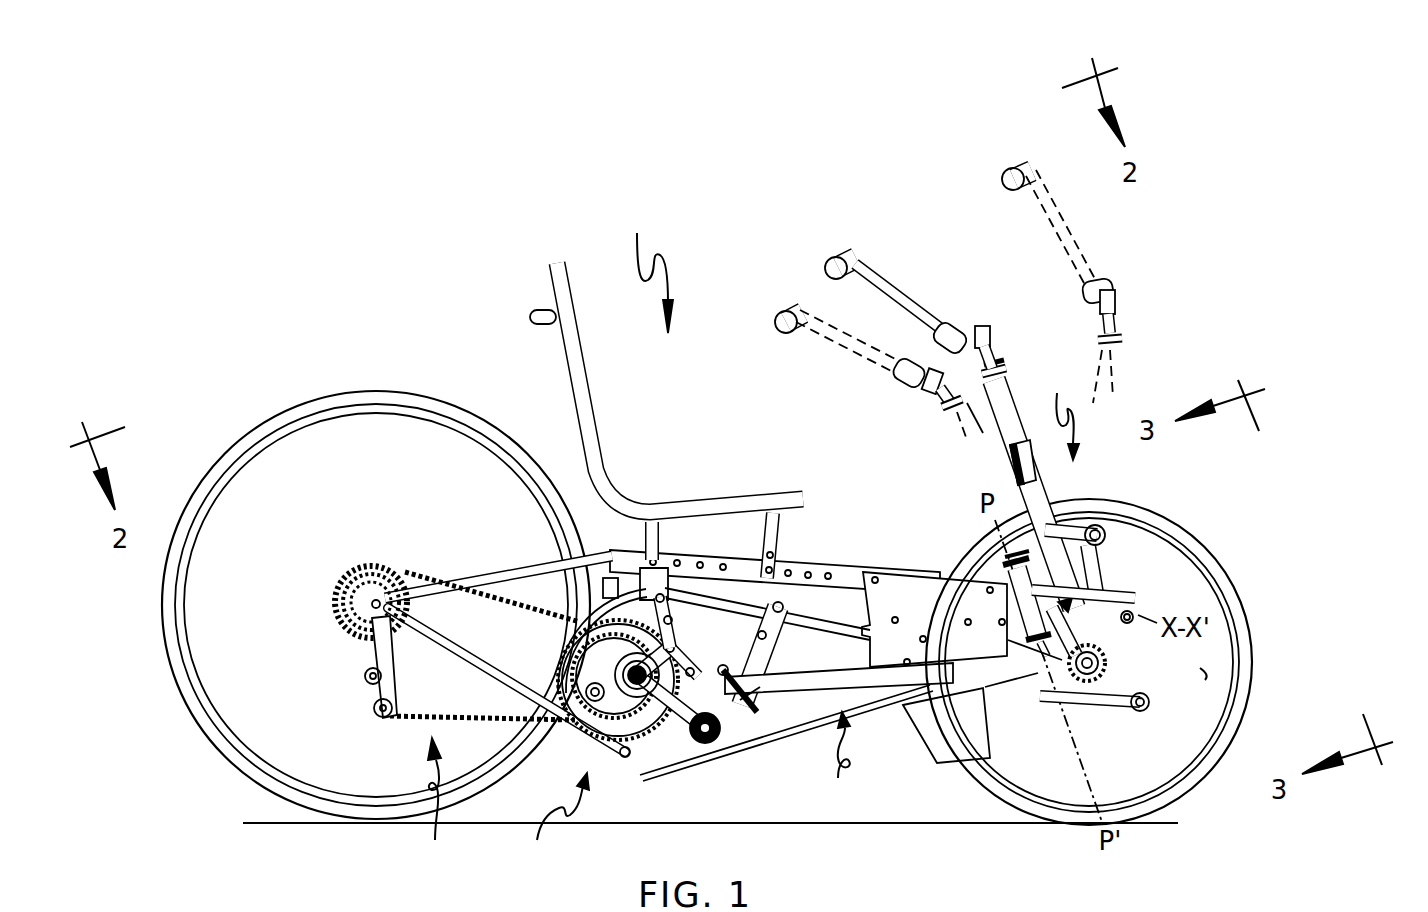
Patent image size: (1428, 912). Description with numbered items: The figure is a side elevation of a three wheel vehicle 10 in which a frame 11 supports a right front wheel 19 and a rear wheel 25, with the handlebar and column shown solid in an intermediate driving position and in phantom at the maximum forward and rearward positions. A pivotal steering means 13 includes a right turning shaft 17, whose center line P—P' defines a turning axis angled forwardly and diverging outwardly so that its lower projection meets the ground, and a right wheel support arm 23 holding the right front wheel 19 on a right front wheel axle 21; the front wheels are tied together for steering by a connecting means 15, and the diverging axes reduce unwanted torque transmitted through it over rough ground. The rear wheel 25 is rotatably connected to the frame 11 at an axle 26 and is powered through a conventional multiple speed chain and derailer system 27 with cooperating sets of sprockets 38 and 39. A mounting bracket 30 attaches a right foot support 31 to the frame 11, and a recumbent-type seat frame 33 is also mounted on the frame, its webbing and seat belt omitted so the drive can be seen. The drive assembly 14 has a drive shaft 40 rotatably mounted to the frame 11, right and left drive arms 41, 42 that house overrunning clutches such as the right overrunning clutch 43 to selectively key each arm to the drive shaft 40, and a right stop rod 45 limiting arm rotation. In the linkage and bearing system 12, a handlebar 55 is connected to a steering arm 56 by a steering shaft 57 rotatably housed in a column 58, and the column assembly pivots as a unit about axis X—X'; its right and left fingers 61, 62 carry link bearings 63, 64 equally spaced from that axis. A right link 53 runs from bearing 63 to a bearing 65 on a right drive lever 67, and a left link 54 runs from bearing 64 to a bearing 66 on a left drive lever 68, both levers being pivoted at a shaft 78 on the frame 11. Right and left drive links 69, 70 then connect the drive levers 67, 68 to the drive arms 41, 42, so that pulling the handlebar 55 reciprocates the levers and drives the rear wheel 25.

The three wheel vehicle 10 is at (646, 263).
The frame 11 is at (855, 570).
The linkage and bearing system 12 is at (839, 760).
The pivotal steering means 13 is at (1030, 486).
The drive assembly 14 is at (553, 823).
The connecting means 15 is at (1225, 672).
The right turning shaft 17 is at (1045, 690).
The right front wheel 19 is at (1193, 538).
The right front wheel axle 21 is at (1093, 675).
The right wheel support arm 23 is at (1087, 675).
The rear wheel 25 is at (234, 773).
The axle 26 is at (397, 578).
The multiple speed chain and derailer system 27 is at (441, 806).
The mounting bracket 30 is at (927, 572).
The right foot support 31 is at (925, 753).
The seat frame 33 is at (750, 497).
The sprockets 38 is at (340, 627).
The sprockets 39 is at (636, 745).
The drive shaft 40 is at (670, 745).
The right drive arm 41 is at (675, 622).
The left drive arm 42 is at (598, 738).
The right overrunning clutch 43 is at (680, 717).
The right stop rod 45 is at (757, 712).
The right link 53 is at (897, 682).
The left link 54 is at (800, 627).
The handlebar 55 is at (918, 300).
The steering arm 56 is at (1130, 637).
The steering shaft 57 is at (1012, 472).
The column 58 is at (1010, 390).
The right finger 61 is at (1153, 688).
The left finger 62 is at (1113, 575).
The link bearing 63 is at (1148, 708).
The link bearing 64 is at (1105, 540).
The bearing 65 is at (760, 687).
The bearing 66 is at (693, 735).
The right drive lever 67 is at (765, 662).
The left drive lever 68 is at (673, 610).
The right drive link 69 is at (725, 623).
The left drive link 70 is at (687, 563).
The shaft 78 is at (722, 735).